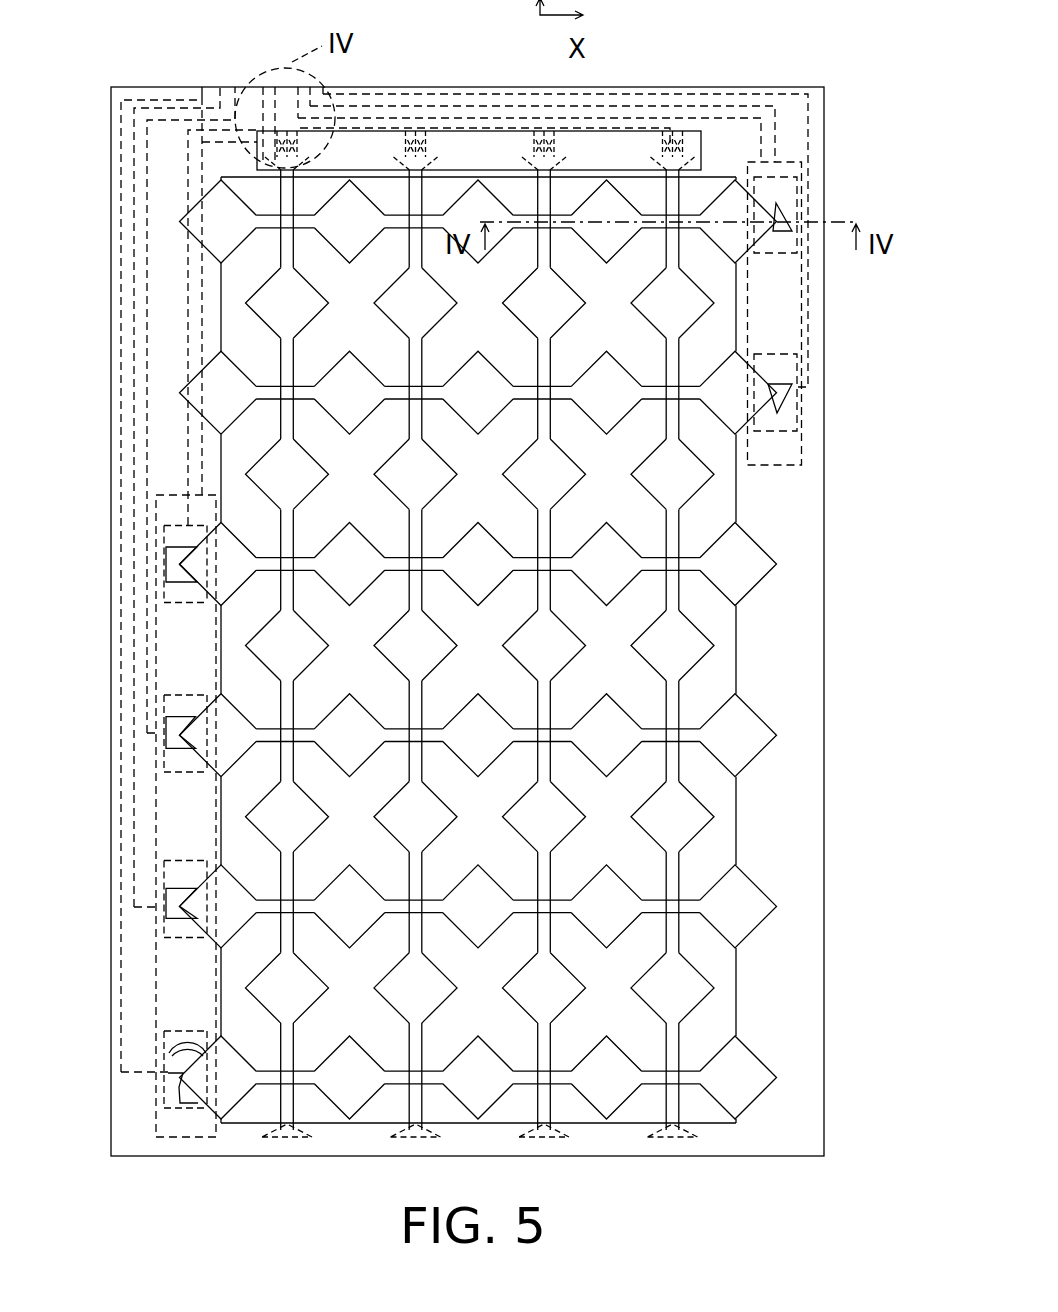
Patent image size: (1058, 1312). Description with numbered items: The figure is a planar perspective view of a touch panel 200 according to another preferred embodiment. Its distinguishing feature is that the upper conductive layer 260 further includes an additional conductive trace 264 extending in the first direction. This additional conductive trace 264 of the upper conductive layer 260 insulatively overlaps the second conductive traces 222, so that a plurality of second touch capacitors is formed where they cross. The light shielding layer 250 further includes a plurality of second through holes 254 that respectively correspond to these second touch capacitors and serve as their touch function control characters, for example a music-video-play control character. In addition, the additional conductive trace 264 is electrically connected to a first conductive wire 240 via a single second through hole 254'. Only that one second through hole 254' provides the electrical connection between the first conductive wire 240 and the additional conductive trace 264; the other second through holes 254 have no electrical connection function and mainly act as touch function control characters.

The touch panel 200 is at (184, 12).
The second conductive traces 222 is at (668, 990).
The first conductive wire 240 is at (285, 106).
The light shielding layer 250 is at (780, 820).
The second through holes 254 is at (535, 254).
The second through hole 254' is at (148, 612).
The upper conductive layer 260 is at (735, 906).
The additional conductive trace 264 is at (613, 148).